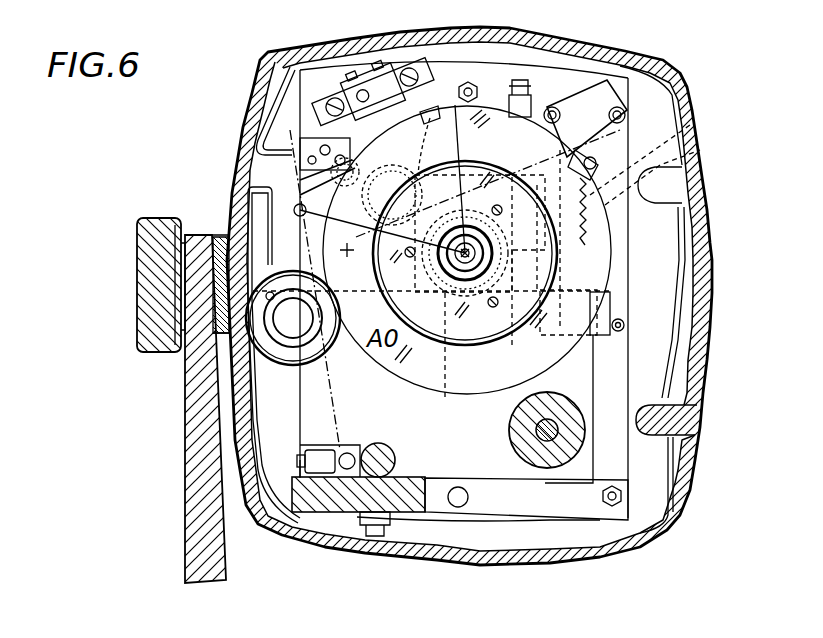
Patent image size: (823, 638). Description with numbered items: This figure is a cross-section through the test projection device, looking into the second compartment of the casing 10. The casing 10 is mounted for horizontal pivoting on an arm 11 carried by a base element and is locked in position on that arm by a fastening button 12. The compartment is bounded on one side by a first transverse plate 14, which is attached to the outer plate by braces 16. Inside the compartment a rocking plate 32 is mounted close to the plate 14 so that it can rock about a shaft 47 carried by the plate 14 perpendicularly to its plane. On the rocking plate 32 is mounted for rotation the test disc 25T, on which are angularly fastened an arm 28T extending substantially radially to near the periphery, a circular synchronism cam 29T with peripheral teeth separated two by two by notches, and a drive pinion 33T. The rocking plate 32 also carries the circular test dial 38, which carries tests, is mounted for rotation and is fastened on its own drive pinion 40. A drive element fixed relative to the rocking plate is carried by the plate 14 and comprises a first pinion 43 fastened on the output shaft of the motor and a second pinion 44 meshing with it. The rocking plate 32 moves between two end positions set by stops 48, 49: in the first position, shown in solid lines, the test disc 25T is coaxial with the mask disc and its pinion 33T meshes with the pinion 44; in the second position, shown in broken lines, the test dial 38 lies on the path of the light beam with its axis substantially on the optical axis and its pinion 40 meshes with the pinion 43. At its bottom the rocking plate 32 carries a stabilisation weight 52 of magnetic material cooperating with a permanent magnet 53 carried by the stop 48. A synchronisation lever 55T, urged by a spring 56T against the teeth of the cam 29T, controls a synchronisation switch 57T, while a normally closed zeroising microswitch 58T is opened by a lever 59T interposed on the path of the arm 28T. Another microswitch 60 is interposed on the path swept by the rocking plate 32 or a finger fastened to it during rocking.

The casing 10 is at (262, 52).
The arm 11 is at (192, 450).
The fastening button 12 is at (152, 220).
The first transverse plate 14 is at (520, 510).
The braces 16 is at (473, 87).
The test disc 25T is at (578, 356).
The arm 28T is at (372, 166).
The circular synchronism cam 29T is at (465, 280).
The rocking plate 32 is at (481, 490).
The drive pinion 33T is at (438, 261).
The test dial 38 is at (282, 350).
The drive pinion 40 is at (262, 275).
The first pinion 43 is at (378, 195).
The second pinion 44 is at (458, 160).
The shaft 47 is at (553, 445).
The stop 48 is at (318, 470).
The stop 49 is at (527, 85).
The stabilisation weight 52 is at (340, 450).
The permanent magnet 53 is at (387, 452).
The synchronisation lever 55T is at (680, 116).
The spring 56T is at (688, 160).
The synchronisation switch 57T is at (607, 92).
The zeroising microswitch 58T is at (365, 88).
The lever 59T is at (432, 114).
The microswitch 60 is at (300, 156).